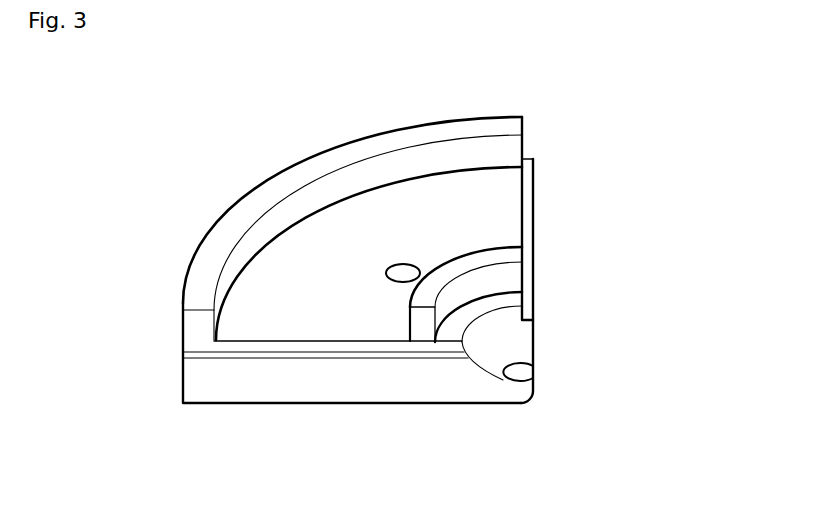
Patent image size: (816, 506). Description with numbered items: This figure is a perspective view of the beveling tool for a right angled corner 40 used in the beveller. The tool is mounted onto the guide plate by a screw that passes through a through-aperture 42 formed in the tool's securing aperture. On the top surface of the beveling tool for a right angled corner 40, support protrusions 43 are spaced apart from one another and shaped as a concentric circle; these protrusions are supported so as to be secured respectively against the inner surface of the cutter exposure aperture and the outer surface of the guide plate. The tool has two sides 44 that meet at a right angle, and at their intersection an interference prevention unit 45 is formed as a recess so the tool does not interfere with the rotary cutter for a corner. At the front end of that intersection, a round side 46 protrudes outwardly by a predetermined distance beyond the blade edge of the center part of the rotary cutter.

The beveling tool for a right angled corner 40 is at (322, 257).
The through-aperture 42 is at (403, 265).
The support protrusions 43 is at (205, 278).
The two sides 44 is at (305, 380).
The interference prevention unit 45 is at (510, 347).
The round side 46 is at (528, 390).